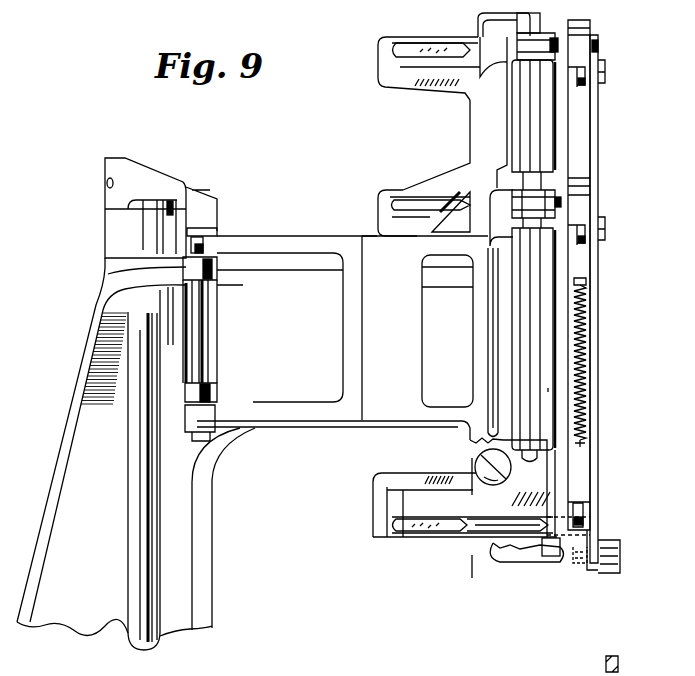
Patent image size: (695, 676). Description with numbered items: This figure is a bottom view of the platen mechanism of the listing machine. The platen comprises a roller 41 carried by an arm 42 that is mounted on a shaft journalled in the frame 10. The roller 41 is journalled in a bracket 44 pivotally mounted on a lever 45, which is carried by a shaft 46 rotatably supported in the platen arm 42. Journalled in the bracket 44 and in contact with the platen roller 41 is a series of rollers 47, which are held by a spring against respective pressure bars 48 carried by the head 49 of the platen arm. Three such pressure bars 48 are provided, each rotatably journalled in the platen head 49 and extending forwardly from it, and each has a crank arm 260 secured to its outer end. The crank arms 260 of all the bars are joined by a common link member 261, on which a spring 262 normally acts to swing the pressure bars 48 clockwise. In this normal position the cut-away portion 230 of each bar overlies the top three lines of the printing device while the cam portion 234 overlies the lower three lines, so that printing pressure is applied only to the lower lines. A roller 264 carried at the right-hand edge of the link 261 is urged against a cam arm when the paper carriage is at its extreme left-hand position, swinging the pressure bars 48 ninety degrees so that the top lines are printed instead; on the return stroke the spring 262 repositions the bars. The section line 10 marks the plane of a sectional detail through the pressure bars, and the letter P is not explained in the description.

The frame 10 is at (470, 462).
The roller 41 is at (557, 443).
The arm 42 is at (303, 432).
The bracket 44 is at (437, 237).
The lever 45 is at (182, 176).
The shaft 46 is at (135, 556).
The rollers 47 is at (556, 203).
The pressure bars 48 is at (434, 45).
The head 49 is at (428, 89).
The cut-away portion 230 is at (453, 524).
The cam portion 234 is at (492, 527).
The crank arm 260 is at (583, 70).
The link member 261 is at (598, 263).
The spring 262 is at (584, 342).
The roller 264 is at (603, 570).
The pawl P is at (548, 390).